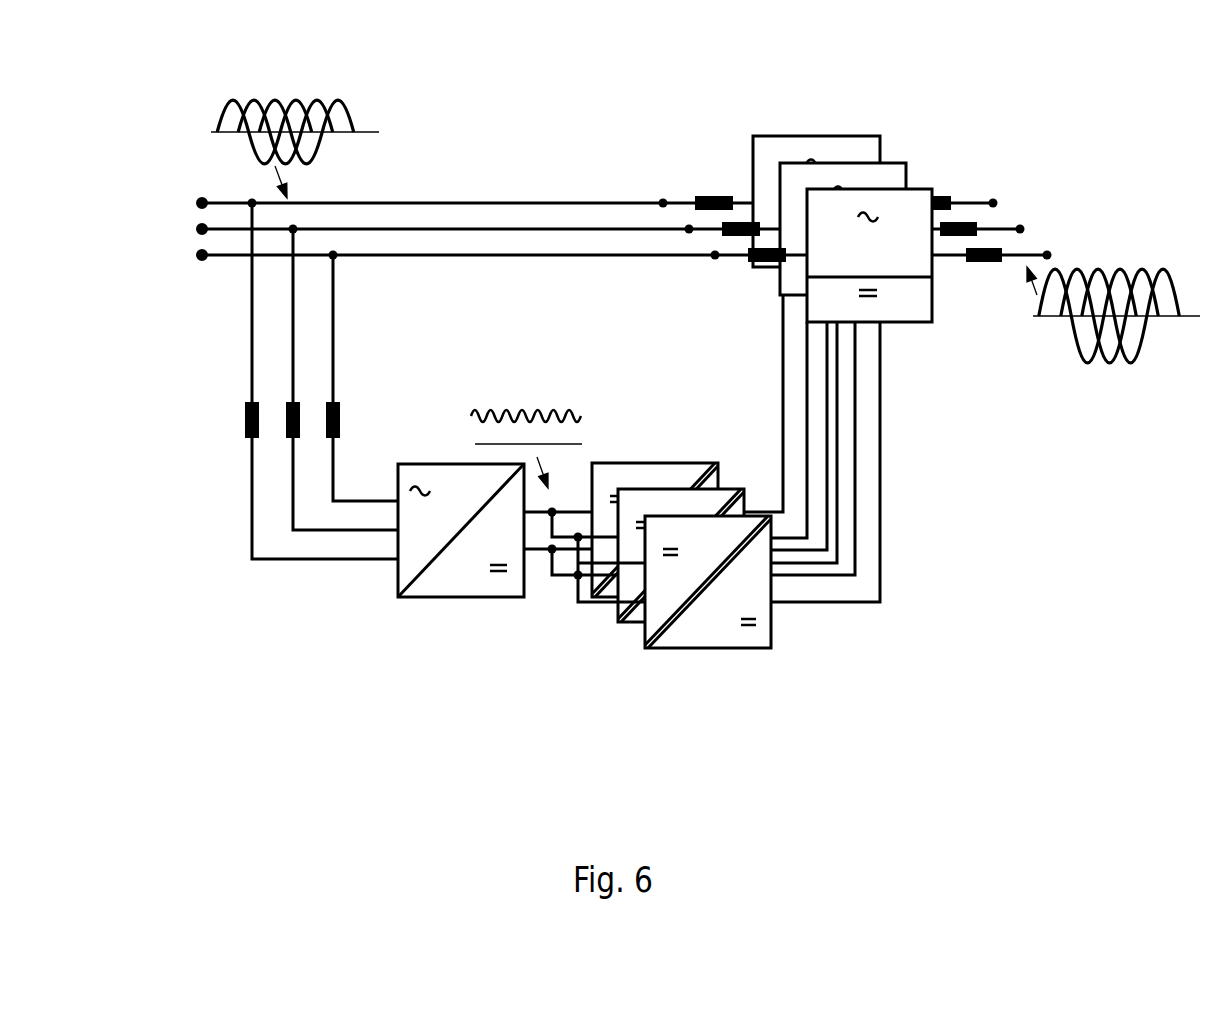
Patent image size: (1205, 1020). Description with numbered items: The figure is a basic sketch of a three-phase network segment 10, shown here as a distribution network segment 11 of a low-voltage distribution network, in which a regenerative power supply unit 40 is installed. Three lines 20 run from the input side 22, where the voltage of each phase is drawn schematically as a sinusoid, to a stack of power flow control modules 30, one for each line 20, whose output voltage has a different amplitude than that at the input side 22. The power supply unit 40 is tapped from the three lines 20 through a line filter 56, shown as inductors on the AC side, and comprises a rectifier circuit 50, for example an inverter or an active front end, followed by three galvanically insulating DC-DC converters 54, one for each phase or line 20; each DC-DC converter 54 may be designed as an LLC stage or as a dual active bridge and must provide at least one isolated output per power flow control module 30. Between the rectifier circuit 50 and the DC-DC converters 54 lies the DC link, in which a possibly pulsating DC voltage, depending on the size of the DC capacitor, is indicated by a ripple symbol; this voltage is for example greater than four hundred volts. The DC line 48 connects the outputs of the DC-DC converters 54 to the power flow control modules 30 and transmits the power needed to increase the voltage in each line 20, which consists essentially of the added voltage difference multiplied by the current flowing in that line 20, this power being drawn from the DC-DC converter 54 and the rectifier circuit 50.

The network segment 10 is at (532, 55).
The distribution network segment 11 is at (572, 55).
The lines 20 is at (459, 201).
The input side 22 is at (175, 222).
The power flow control module 30 is at (932, 110).
The power supply unit 40 is at (556, 682).
The DC line 48 is at (882, 482).
The rectifier circuit 50 is at (442, 600).
The DC-DC converter 54 is at (774, 677).
The line filter 56 is at (243, 420).